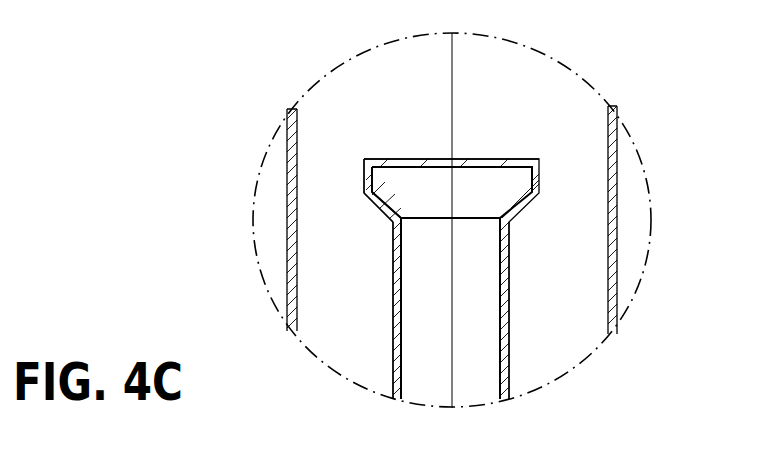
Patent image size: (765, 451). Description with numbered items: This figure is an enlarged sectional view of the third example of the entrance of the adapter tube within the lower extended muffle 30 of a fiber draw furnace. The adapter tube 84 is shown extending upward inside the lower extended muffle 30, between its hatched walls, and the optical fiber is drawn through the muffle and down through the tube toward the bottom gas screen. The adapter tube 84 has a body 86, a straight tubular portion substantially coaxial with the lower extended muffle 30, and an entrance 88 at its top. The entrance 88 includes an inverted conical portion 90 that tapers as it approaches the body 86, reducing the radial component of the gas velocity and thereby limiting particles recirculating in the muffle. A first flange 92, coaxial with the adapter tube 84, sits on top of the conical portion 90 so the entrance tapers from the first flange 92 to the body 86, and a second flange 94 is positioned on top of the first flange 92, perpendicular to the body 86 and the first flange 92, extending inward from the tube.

The lower extended muffle 30 is at (617, 210).
The adapter tube 84 is at (520, 320).
The body 86 is at (395, 310).
The entrance 88 is at (540, 148).
The conical portion 90 is at (373, 207).
The first flange 92 is at (363, 168).
The second flange 94 is at (388, 162).